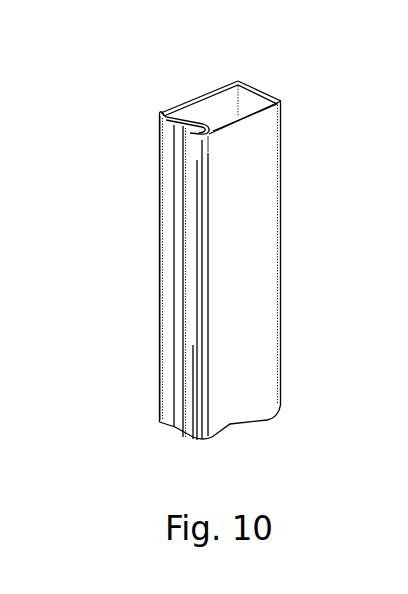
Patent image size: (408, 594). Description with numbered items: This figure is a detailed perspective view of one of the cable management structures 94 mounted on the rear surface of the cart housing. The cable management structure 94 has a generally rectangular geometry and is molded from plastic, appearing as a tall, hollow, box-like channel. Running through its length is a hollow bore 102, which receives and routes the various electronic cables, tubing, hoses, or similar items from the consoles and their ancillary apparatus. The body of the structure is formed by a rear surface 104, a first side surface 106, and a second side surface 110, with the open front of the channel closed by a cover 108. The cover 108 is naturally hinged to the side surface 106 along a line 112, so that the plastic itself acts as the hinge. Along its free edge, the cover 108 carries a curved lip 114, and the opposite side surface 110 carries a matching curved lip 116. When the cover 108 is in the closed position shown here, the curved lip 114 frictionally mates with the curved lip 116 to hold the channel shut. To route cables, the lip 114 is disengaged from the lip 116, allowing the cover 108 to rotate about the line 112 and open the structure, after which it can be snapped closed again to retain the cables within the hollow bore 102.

The cable management structure 94 is at (153, 279).
The hollow bore 102 is at (224, 90).
The rear surface 104 is at (200, 110).
The side surface 106 is at (263, 92).
The cover 108 is at (265, 224).
The side surface 110 is at (163, 195).
The line 112 is at (281, 280).
The curved lip 114 is at (184, 128).
The curved lip 116 is at (221, 131).